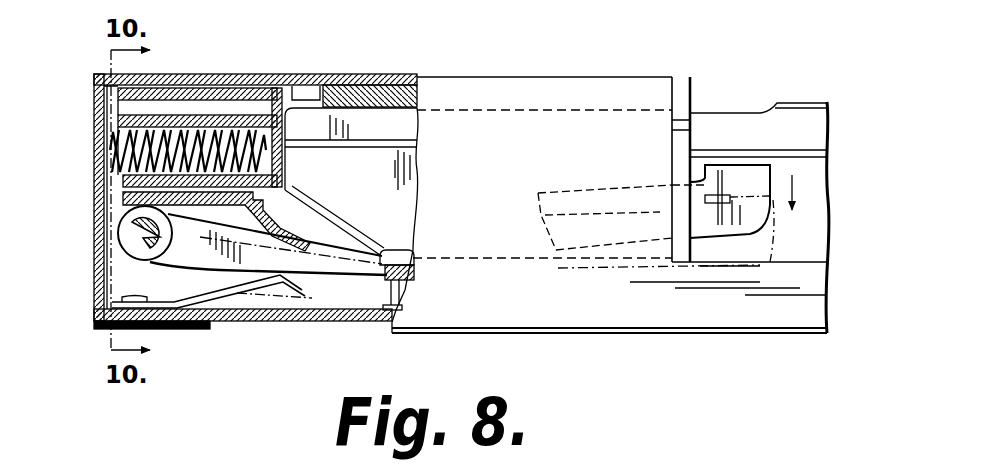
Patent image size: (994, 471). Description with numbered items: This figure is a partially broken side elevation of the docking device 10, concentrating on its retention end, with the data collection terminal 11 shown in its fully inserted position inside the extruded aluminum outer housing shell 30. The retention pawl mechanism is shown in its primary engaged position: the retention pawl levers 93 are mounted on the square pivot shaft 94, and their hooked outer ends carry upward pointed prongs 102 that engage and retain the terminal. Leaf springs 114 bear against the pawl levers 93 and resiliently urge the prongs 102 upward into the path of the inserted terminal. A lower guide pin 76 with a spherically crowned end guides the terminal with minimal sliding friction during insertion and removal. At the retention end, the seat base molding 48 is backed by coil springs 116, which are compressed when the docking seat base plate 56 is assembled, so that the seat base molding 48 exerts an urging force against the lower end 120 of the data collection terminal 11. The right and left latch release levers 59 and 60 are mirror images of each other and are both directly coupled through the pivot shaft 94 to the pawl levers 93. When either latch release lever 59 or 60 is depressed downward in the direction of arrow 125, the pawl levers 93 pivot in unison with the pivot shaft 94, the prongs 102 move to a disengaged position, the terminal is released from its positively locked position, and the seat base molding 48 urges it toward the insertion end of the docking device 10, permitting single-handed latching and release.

The docking device 10 is at (592, 322).
The data collection terminal 11 is at (380, 122).
The outer housing shell 30 is at (561, 72).
The seat base molding 48 is at (100, 95).
The docking seat base plate 56 is at (97, 200).
The right latch release lever 59 is at (555, 195).
The left latch release lever 60 is at (592, 215).
The lower guide pin 76 is at (415, 262).
The retention pawl lever 93 is at (193, 260).
The pivot shaft 94 is at (140, 240).
The prong 102 is at (383, 240).
The leaf spring 114 is at (265, 283).
The coil spring 116 is at (98, 157).
The lower end 120 is at (296, 82).
The arrow 125 is at (792, 187).